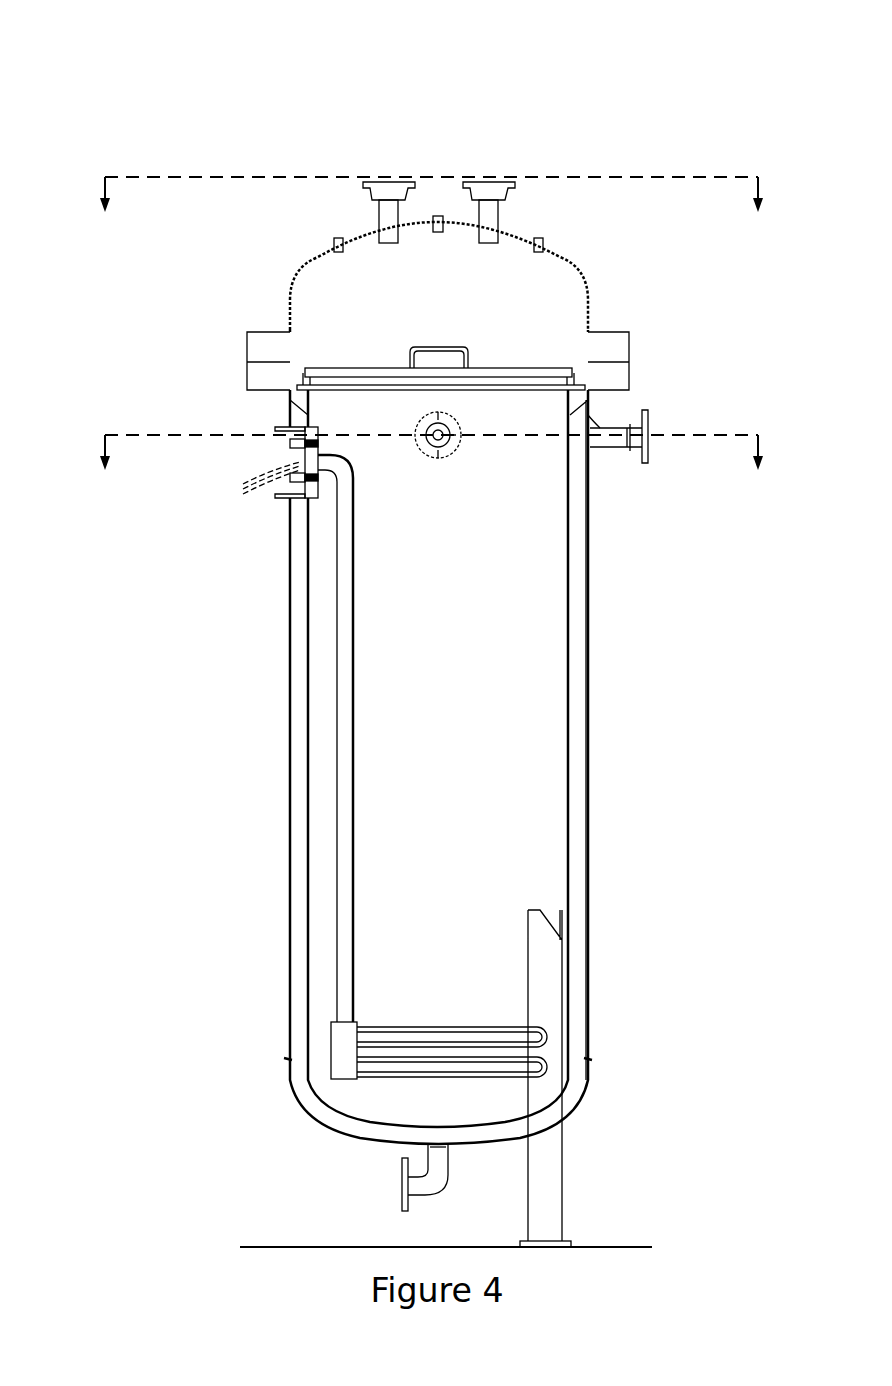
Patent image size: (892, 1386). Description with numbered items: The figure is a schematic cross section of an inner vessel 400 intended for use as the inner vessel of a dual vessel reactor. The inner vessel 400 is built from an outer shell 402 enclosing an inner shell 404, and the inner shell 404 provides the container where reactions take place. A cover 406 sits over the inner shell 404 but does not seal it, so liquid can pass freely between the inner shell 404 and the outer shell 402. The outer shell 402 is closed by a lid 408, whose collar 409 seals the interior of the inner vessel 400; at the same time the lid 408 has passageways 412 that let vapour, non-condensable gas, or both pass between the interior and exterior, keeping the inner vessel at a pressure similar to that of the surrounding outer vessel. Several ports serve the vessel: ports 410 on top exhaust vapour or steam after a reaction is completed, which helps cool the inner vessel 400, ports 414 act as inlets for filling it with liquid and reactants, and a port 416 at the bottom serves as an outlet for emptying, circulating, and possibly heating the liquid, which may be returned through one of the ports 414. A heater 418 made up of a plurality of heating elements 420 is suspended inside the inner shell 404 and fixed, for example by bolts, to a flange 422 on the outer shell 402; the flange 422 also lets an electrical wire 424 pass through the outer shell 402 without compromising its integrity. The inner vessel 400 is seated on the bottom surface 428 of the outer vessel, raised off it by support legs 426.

The inner vessel 400 is at (457, 15).
The outer shell 402 is at (588, 780).
The inner shell 404 is at (567, 730).
The cover 406 is at (507, 363).
The lid 408 is at (327, 288).
The collar 409 is at (629, 355).
The ports 410 is at (488, 176).
The passageways 412 is at (540, 260).
The ports 414 is at (465, 437).
The port 416 is at (403, 1182).
The heater 418 is at (343, 672).
The heating elements 420 is at (407, 1073).
The flange 422 is at (290, 500).
The electrical wire 424 is at (252, 470).
The support legs 426 is at (562, 1173).
The bottom surface 428 is at (598, 1222).